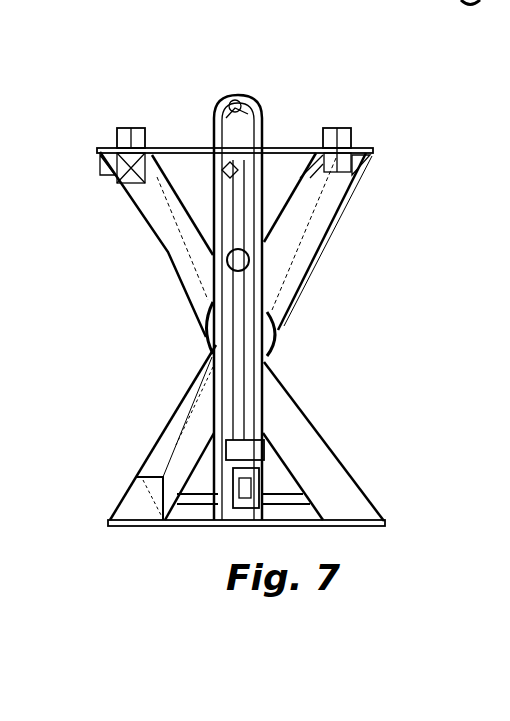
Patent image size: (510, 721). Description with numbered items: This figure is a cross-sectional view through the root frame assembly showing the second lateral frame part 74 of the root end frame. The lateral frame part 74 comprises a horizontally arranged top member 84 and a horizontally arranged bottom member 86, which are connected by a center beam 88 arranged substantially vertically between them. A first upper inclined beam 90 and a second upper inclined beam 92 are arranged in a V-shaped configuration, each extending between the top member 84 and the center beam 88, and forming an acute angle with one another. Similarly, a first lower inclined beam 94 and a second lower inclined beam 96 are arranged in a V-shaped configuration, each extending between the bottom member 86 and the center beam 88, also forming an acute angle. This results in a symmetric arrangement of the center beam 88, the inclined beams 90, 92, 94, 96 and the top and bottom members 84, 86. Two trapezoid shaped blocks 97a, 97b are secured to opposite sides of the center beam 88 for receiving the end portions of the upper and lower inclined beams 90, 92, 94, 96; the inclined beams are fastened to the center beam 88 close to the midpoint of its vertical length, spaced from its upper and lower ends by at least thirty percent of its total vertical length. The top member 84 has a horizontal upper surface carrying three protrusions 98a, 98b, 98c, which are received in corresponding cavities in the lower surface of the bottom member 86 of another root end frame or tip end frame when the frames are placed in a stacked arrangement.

The second lateral frame part 74 is at (225, 54).
The top member 84 is at (180, 150).
The bottom member 86 is at (192, 525).
The center beam 88 is at (245, 383).
The first upper inclined beam 90 is at (320, 198).
The second upper inclined beam 92 is at (150, 189).
The first lower inclined beam 94 is at (323, 452).
The second lower inclined beam 96 is at (178, 445).
The trapezoid shaped block 97a is at (210, 342).
The trapezoid shaped block 97b is at (272, 332).
The protrusion 98a is at (346, 137).
The protrusion 98b is at (245, 112).
The protrusion 98c is at (133, 133).